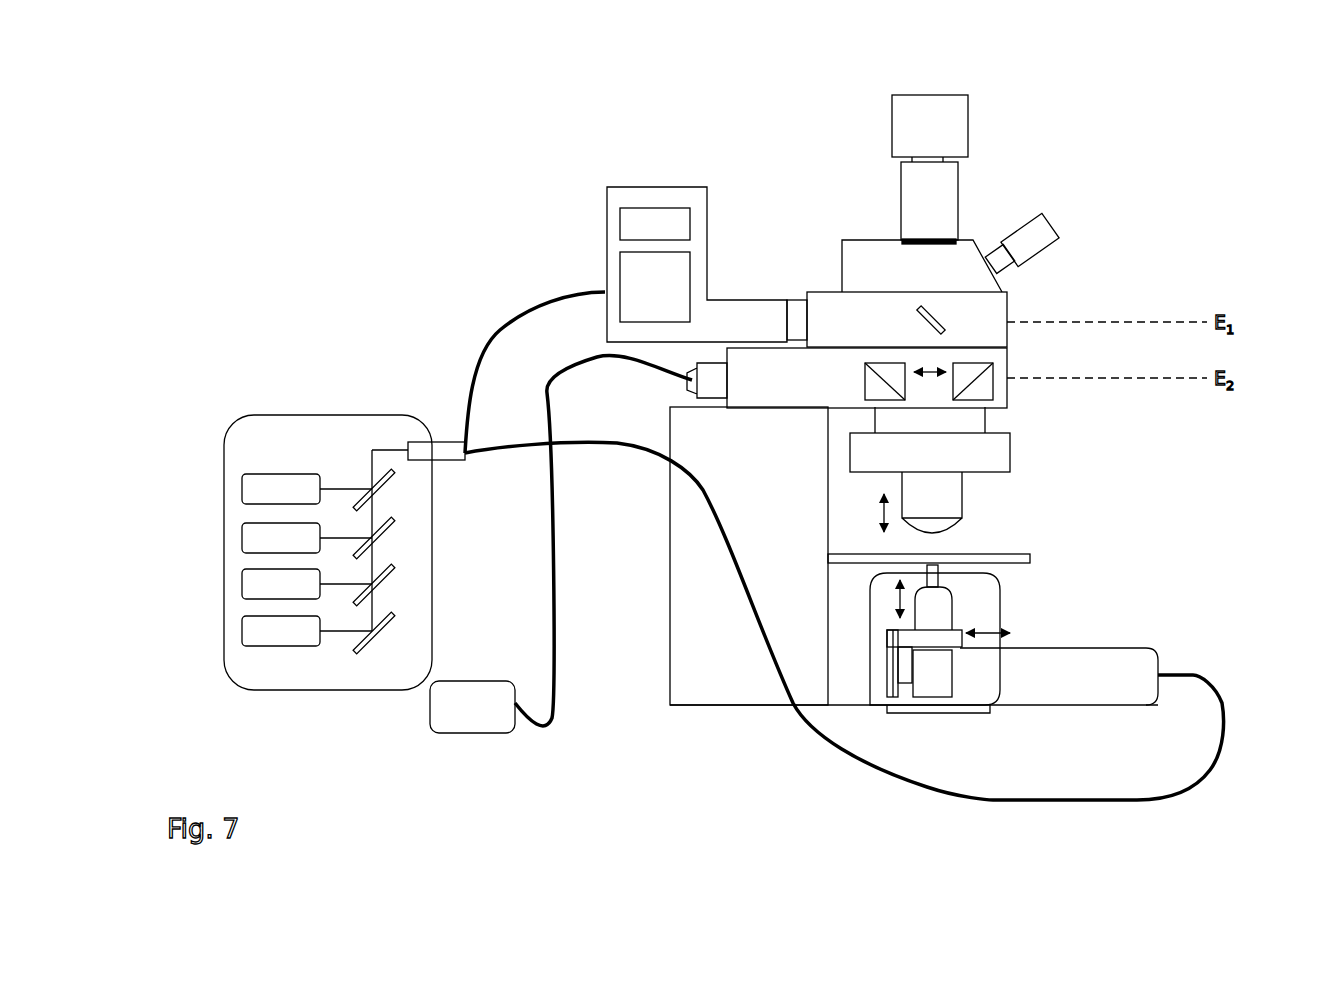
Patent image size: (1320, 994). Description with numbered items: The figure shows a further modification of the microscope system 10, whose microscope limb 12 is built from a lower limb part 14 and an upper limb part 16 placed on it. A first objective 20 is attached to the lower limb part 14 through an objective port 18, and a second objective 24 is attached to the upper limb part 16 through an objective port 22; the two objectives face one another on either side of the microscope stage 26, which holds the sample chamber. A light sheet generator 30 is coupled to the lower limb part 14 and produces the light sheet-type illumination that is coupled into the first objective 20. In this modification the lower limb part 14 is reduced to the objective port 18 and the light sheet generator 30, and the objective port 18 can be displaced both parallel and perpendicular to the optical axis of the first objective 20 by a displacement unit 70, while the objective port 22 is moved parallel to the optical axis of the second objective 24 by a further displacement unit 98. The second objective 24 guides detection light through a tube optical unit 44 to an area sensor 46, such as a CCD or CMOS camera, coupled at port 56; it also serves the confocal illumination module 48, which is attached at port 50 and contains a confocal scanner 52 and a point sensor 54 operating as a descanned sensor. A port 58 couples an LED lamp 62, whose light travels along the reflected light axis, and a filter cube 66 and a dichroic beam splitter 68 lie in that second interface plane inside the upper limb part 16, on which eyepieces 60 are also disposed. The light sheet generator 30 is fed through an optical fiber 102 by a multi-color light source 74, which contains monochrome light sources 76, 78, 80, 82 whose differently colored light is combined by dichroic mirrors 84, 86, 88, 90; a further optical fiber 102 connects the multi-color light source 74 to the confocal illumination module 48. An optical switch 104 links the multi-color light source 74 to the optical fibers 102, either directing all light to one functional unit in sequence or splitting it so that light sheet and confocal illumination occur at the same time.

The microscope system 10 is at (222, 167).
The microscope limb 12 is at (1115, 108).
The lower limb part 14 is at (1150, 590).
The upper limb part 16 is at (1100, 272).
The objective port 18 is at (975, 712).
The first objective 20 is at (958, 612).
The objective port 22 is at (1010, 462).
The second objective 24 is at (962, 498).
The microscope stage 26 is at (1030, 556).
The light sheet generator 30 is at (1158, 650).
The tube optical unit 44 is at (913, 290).
The area sensor 46 is at (968, 114).
The confocal illumination module 48 is at (607, 233).
The port 50 is at (800, 300).
The confocal scanner 52 is at (607, 278).
The point sensor 54 is at (643, 207).
The port 56 is at (968, 152).
The port 58 is at (692, 397).
The eyepieces 60 is at (1047, 214).
The LED lamp 62 is at (430, 705).
The filter cube 66 is at (866, 393).
The dichroic beam splitter 68 is at (995, 392).
The displacement unit 70 is at (885, 663).
The multi-color light source 74 is at (293, 417).
The monochrome light source 76 is at (242, 625).
The monochrome light source 78 is at (242, 577).
The monochrome light source 80 is at (242, 533).
The monochrome light source 82 is at (242, 483).
The dichroic mirror 84 is at (393, 617).
The dichroic mirror 86 is at (393, 569).
The dichroic mirror 88 is at (393, 522).
The dichroic mirror 90 is at (393, 474).
The displacement unit 98 is at (985, 422).
The optical fiber 102 is at (480, 370).
The optical switch 104 is at (447, 442).